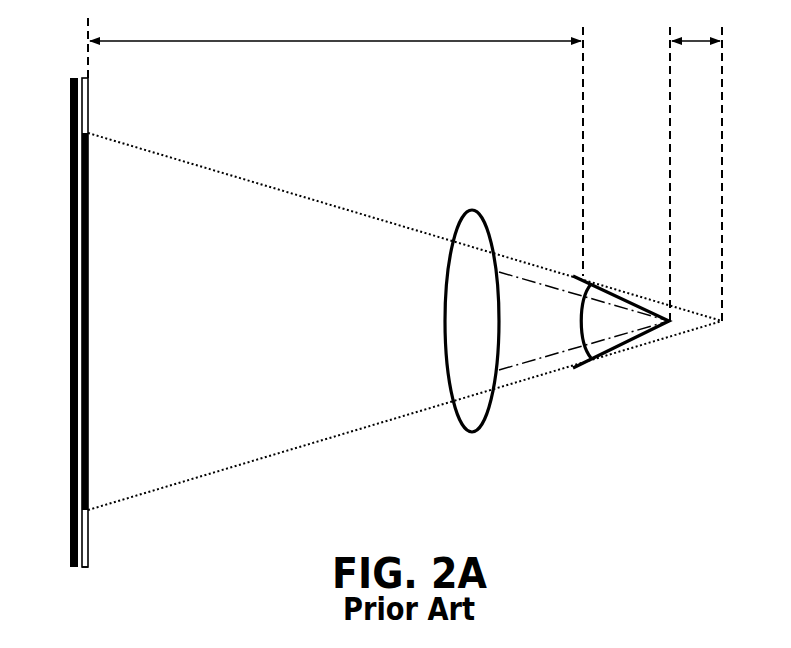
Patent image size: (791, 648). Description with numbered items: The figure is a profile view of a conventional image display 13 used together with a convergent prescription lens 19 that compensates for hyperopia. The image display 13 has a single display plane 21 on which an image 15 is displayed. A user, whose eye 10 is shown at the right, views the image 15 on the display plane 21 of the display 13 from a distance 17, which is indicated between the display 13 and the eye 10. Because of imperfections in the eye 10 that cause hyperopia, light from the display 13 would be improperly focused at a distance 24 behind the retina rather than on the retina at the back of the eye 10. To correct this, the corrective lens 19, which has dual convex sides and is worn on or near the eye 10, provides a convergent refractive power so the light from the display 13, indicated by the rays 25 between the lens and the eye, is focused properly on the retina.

The eye 10 is at (617, 276).
The image display 13 is at (53, 101).
The image 15 is at (89, 300).
The distance 17 is at (355, 41).
The convergent prescription lens 19 is at (472, 210).
The display plane 21 is at (85, 567).
The distance 24 is at (697, 41).
The light rays 25 is at (532, 282).